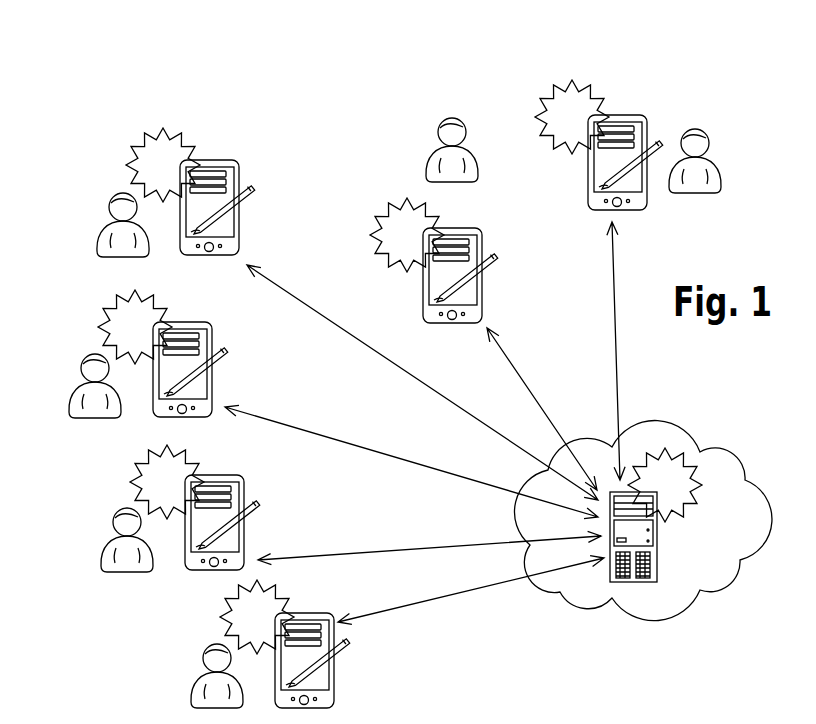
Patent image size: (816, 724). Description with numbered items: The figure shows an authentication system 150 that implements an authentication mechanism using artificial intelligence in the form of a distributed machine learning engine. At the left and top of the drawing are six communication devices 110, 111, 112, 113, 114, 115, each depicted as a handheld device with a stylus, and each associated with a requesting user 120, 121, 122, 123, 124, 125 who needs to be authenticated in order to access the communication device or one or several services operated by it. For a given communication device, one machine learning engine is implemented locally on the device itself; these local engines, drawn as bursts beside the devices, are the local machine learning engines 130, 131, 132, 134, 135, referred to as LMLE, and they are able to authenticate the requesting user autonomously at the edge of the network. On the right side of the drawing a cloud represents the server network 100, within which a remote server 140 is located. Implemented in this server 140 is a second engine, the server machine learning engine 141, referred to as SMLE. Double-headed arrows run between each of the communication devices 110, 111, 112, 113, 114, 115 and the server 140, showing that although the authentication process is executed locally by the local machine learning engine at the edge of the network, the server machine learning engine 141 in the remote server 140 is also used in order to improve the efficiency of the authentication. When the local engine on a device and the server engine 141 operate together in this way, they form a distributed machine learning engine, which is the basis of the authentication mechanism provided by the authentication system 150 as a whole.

The server network 100 is at (748, 477).
The communication device 110 is at (626, 113).
The communication device 111 is at (484, 290).
The communication device 112 is at (224, 165).
The communication device 113 is at (213, 385).
The communication device 114 is at (245, 548).
The communication device 115 is at (333, 676).
The requesting user 120 is at (722, 177).
The requesting user 121 is at (432, 157).
The requesting user 122 is at (117, 202).
The requesting user 123 is at (72, 395).
The requesting user 124 is at (103, 556).
The requesting user 125 is at (195, 688).
The local machine learning engine 130 is at (555, 92).
The local machine learning engine 131 is at (372, 243).
The local machine learning engine 132 is at (145, 148).
The local machine learning engine 134 is at (132, 478).
The machine learning engine 135 is at (224, 627).
The server 140 is at (658, 562).
The server machine learning engine 141 is at (658, 448).
The authentication system 150 is at (585, 642).